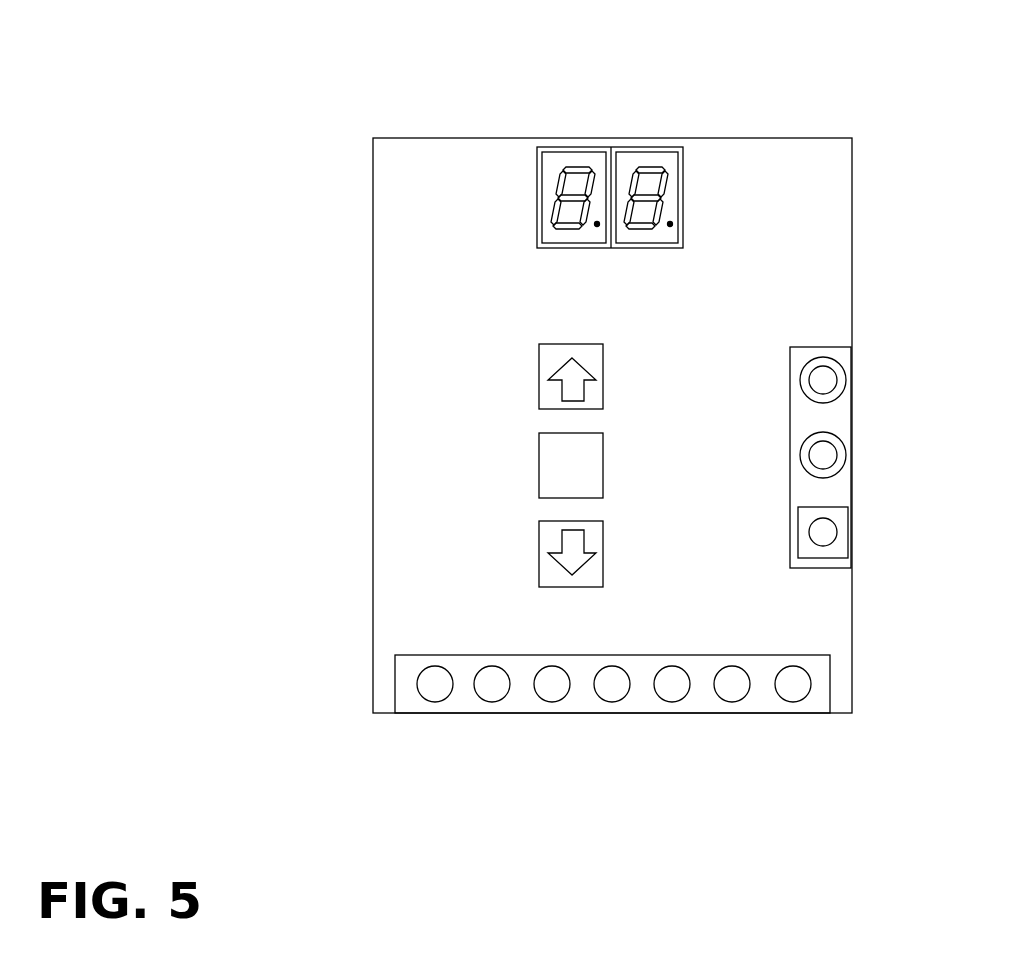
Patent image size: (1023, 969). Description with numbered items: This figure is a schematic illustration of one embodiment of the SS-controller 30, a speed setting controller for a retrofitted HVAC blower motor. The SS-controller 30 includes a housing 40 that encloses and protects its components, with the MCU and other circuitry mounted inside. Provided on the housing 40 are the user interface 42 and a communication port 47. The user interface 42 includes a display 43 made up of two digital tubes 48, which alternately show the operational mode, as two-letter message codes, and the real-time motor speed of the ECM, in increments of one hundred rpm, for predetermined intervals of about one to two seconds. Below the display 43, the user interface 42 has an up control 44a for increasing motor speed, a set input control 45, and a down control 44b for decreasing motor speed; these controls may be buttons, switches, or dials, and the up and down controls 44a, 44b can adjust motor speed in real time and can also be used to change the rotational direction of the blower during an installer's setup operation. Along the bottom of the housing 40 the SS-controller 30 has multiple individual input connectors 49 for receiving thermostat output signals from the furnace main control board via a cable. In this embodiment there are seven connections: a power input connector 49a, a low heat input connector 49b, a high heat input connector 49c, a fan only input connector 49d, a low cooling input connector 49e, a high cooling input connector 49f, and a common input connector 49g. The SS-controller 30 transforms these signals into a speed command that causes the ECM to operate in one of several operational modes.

The SS-controller 30 is at (299, 55).
The housing 40 is at (860, 198).
The user interface 42 is at (490, 185).
The display 43 is at (690, 167).
The digital tubes 48 is at (652, 162).
The up control 44a is at (603, 383).
The set input control 45 is at (603, 472).
The down control 44b is at (603, 557).
The communication port 47 is at (860, 431).
The input connectors 49 is at (390, 680).
The power input connector 49a is at (441, 702).
The low heat input connector 49b is at (498, 702).
The high heat input connector 49c is at (558, 702).
The fan only input connector 49d is at (618, 702).
The low cooling input connector 49e is at (678, 702).
The high cooling input connector 49f is at (738, 702).
The common input connector 49g is at (799, 702).